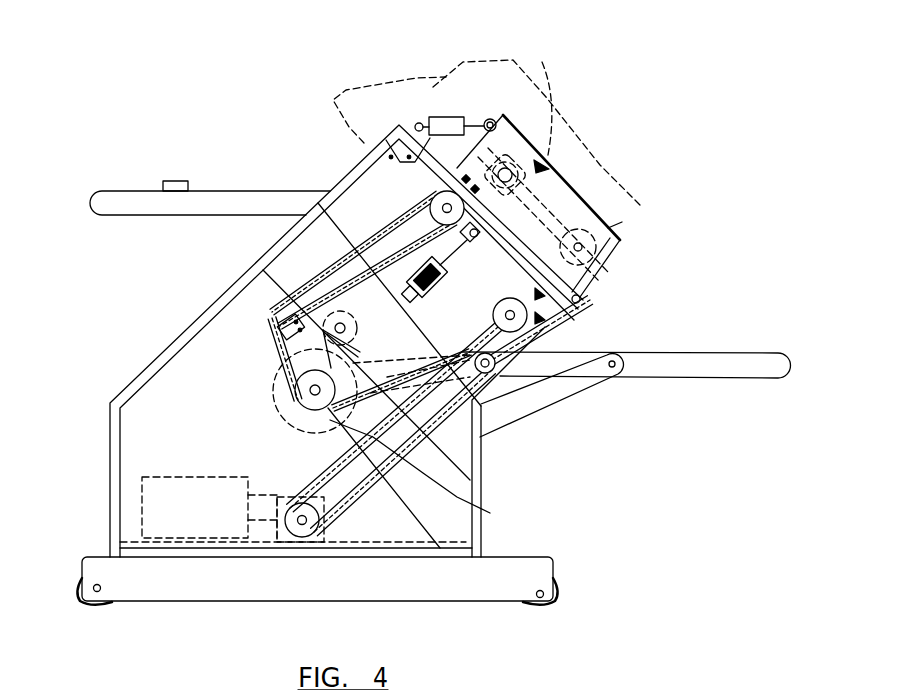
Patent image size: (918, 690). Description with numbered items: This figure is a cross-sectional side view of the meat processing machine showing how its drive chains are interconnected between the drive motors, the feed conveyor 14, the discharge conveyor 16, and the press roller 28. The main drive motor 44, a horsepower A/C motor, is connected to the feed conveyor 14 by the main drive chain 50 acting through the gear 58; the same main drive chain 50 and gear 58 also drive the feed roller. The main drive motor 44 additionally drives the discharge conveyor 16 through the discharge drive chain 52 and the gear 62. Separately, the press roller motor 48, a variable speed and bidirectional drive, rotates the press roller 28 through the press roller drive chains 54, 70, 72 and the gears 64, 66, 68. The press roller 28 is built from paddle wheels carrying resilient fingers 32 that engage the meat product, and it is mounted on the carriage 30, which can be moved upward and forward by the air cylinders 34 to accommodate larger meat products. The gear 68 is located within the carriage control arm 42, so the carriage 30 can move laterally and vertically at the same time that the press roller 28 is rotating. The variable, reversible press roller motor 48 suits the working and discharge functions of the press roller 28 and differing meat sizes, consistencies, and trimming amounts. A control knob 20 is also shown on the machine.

The feed conveyor 14 is at (113, 218).
The discharge conveyor 16 is at (727, 353).
The control knob 20 is at (175, 180).
The press roller 28 is at (603, 183).
The carriage 30 is at (595, 200).
The resilient fingers 32 is at (486, 120).
The air cylinders 34 is at (449, 116).
The carriage control arm 42 is at (622, 220).
The main drive motor 44 is at (419, 517).
The press roller motor 48 is at (222, 522).
The main drive chain 50 is at (373, 240).
The discharge drive chain 52 is at (430, 476).
The press roller drive chain 54 is at (343, 497).
The gear 58 is at (436, 203).
The gear 62 is at (497, 372).
The gear 64 is at (311, 532).
The gear 66 is at (515, 333).
The gear 68 is at (560, 237).
The press roller drive chain 70 is at (592, 287).
The press roller drive chain 72 is at (603, 183).